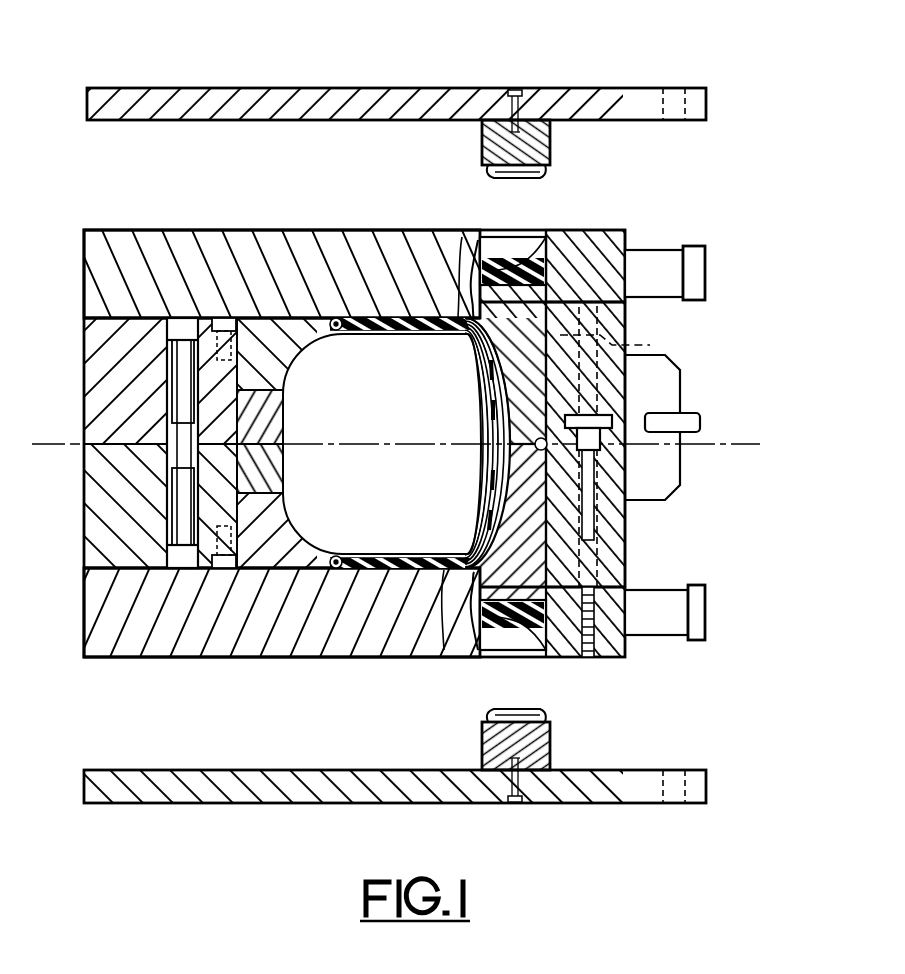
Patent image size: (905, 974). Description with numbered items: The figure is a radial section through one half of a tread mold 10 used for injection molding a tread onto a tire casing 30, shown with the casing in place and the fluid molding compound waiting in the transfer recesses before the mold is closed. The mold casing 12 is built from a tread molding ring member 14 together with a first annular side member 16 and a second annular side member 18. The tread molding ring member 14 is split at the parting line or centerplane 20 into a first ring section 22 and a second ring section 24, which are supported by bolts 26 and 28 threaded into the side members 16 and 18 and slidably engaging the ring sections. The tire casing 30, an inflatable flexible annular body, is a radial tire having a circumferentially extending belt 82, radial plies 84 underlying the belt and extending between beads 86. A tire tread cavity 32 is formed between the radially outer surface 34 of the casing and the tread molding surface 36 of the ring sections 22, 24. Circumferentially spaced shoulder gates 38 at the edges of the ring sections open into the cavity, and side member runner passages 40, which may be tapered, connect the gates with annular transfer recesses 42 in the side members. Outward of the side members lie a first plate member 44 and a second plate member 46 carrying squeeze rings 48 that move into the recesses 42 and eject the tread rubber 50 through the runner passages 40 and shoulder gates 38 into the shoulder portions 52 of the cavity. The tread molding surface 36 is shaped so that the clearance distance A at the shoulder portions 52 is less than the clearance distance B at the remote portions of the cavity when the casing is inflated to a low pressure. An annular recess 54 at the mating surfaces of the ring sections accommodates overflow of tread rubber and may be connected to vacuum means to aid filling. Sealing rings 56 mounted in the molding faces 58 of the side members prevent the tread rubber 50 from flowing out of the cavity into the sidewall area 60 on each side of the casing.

The tread mold 10 is at (652, 58).
The mold casing 12 is at (623, 312).
The tread molding ring member 14 is at (623, 325).
The first annular side member 16 is at (86, 287).
The second annular side member 18 is at (86, 609).
The parting line or centerplane 20 is at (50, 444).
The first ring section 22 is at (488, 375).
The second ring section 24 is at (490, 460).
The bolt 26 is at (650, 346).
The bolt 28 is at (600, 535).
The tire casing 30 is at (362, 335).
The tire tread cavity 32 is at (496, 410).
The radially outer surface 34 is at (480, 400).
The tread molding surface 36 is at (550, 480).
The shoulder gate 38 is at (462, 318).
The side member runner passage 40 is at (478, 240).
The annular transfer recess 42 is at (523, 240).
The first plate member 44 is at (580, 88).
The second plate member 46 is at (582, 803).
The squeeze ring 48 is at (548, 150).
The tread rubber 50 is at (556, 238).
The shoulder portion 52 is at (456, 328).
The annular recess 54 is at (665, 470).
The sealing ring 56 is at (378, 324).
The molding face 58 is at (368, 318).
The sidewall area 60 is at (406, 318).
The belt 82 is at (490, 504).
The radial ply 84 is at (354, 556).
The bead 86 is at (338, 332).
The clearance distance at shoulder portions A is at (446, 384).
The clearance distance at remote portions B is at (480, 440).